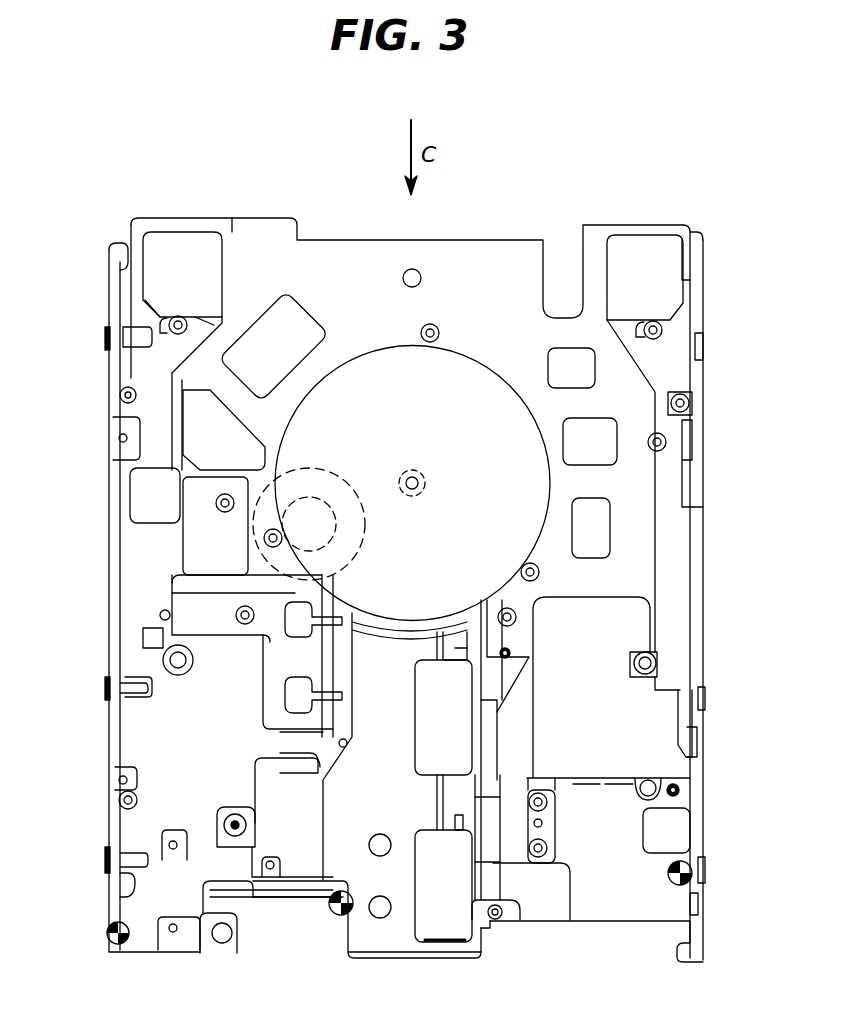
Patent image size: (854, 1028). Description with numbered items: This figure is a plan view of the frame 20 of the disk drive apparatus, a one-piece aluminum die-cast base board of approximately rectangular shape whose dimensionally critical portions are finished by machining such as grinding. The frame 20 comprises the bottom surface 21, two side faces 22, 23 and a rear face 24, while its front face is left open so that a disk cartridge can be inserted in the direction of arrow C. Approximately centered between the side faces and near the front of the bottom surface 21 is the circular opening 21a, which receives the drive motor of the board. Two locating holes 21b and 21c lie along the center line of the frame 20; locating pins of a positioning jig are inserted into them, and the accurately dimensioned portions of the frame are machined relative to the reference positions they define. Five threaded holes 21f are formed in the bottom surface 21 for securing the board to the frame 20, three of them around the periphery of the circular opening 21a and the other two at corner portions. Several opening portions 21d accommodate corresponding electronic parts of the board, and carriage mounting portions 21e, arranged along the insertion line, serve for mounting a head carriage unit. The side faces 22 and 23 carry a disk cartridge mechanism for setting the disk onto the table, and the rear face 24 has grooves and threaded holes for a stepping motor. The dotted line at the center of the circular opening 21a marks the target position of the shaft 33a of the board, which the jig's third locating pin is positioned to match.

The frame 20 is at (668, 137).
The bottom surface 21 is at (489, 241).
The circular opening 21a is at (485, 365).
The locating hole 21b is at (422, 279).
The locating hole 21c is at (372, 832).
The opening portions 21d is at (173, 240).
The carriage mounting portions 21e is at (460, 743).
The threaded holes 21f is at (188, 320).
The side face 22 is at (706, 625).
The side face 23 is at (108, 556).
The rear face 24 is at (522, 925).
The shaft 33a is at (427, 490).